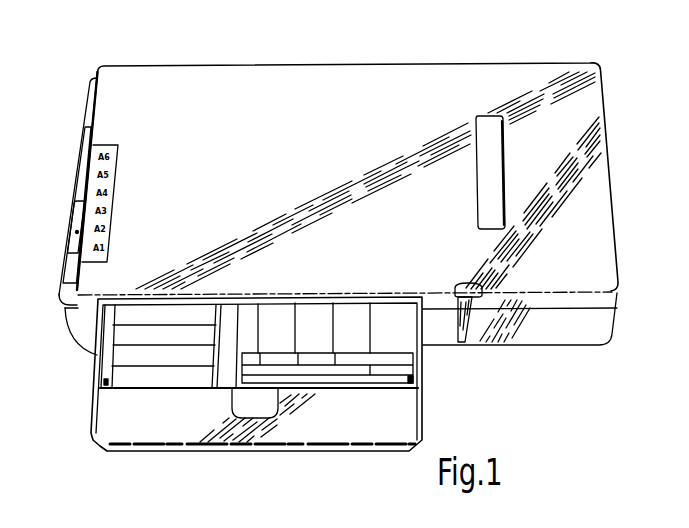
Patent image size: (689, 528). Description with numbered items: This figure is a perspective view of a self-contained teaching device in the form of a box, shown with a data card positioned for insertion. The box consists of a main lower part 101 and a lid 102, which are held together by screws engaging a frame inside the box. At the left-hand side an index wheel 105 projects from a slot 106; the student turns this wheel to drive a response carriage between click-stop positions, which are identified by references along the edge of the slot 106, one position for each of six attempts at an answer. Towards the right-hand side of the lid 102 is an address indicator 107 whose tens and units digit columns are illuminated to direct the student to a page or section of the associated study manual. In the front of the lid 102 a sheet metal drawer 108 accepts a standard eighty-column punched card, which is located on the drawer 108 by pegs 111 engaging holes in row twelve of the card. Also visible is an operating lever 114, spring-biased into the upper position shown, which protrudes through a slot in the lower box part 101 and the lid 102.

The main lower part 101 is at (551, 346).
The lid 102 is at (618, 297).
The index wheel 105 is at (74, 241).
The slot 106 is at (87, 150).
The address indicator 107 is at (486, 122).
The sheet metal drawer 108 is at (85, 417).
The pegs 111 is at (106, 383).
The operating lever 114 is at (466, 327).